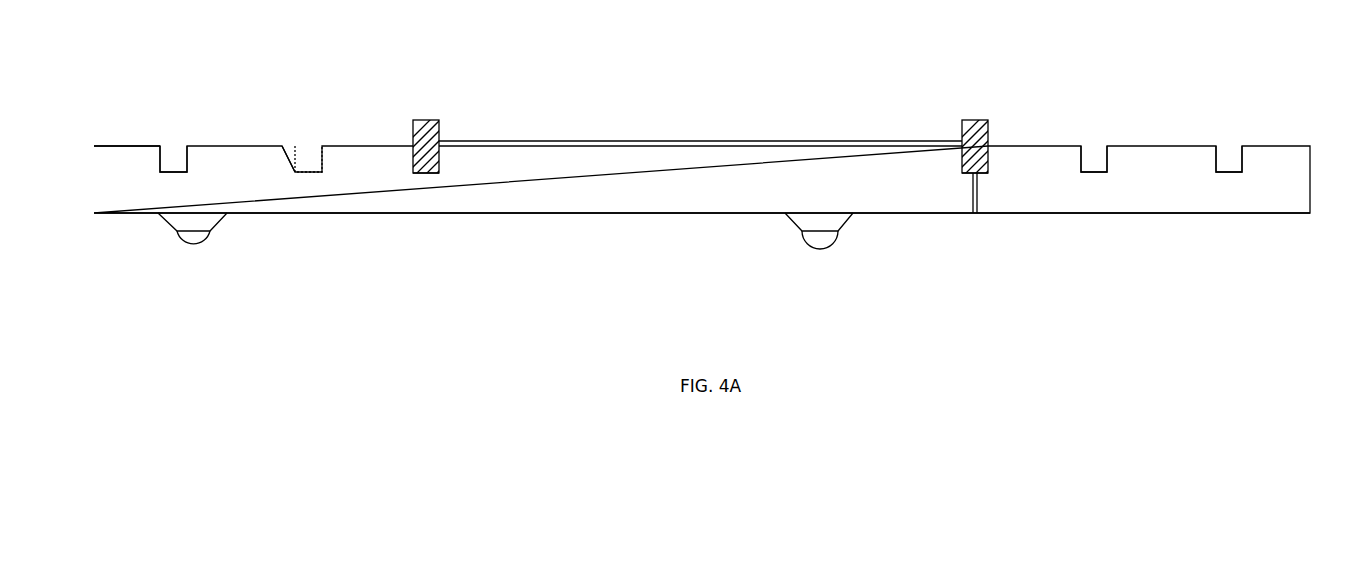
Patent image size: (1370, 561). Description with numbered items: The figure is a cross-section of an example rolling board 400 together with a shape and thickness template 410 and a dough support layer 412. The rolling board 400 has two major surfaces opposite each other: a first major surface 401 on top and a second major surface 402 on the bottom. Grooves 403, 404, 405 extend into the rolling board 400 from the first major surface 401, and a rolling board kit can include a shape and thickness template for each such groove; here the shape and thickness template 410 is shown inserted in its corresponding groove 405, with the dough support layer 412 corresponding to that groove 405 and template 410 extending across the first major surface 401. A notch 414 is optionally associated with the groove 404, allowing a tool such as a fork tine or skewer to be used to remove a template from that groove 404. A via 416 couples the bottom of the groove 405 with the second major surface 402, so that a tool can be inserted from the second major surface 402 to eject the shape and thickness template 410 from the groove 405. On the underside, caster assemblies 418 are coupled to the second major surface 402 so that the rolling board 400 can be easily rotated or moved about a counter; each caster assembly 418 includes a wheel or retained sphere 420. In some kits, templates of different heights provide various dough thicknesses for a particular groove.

The rolling board 400 is at (1310, 180).
The first major surface 401 is at (136, 145).
The second major surface 402 is at (625, 214).
The groove 403 is at (176, 140).
The groove 404 is at (312, 136).
The groove 405 is at (439, 185).
The shape and thickness template 410 is at (423, 119).
The dough support layer 412 is at (579, 140).
The notch 414 is at (287, 136).
The via 416 is at (976, 224).
The caster assembly 418 is at (150, 223).
The retained sphere 420 is at (195, 248).